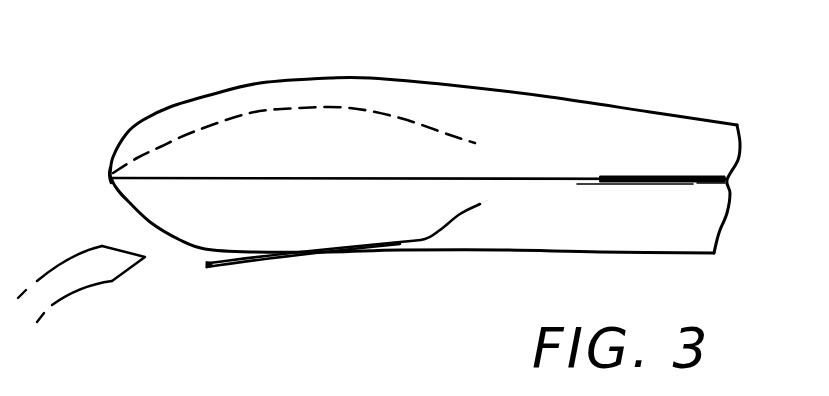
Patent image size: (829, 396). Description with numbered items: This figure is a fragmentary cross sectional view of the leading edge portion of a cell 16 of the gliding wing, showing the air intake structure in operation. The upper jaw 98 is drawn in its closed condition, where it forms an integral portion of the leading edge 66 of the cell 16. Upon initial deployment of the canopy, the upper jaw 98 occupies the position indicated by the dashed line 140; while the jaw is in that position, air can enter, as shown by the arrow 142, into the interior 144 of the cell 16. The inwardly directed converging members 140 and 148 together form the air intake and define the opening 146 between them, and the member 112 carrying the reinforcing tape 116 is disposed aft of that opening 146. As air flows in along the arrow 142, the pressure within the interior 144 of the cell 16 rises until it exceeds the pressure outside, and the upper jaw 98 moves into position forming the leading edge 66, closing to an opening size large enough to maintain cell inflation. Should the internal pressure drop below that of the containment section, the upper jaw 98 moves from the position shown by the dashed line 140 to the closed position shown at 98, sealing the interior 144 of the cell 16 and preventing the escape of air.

The cell 16 is at (447, 81).
The leading edge 66 is at (110, 173).
The upper jaw 98 is at (127, 200).
The member 112 is at (697, 183).
The reinforcing tape 116 is at (683, 178).
The dashed line position of upper jaw 140 is at (296, 110).
The arrow 142 is at (75, 279).
The interior 144 is at (420, 152).
The opening 146 is at (480, 193).
The converging member 148 is at (450, 222).